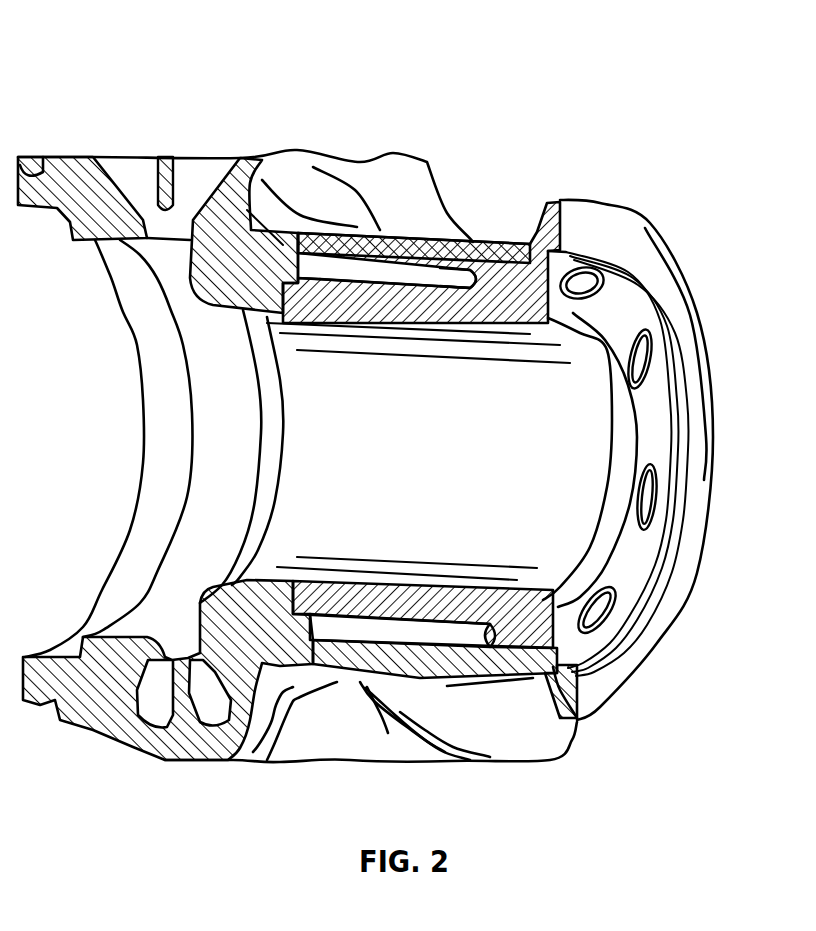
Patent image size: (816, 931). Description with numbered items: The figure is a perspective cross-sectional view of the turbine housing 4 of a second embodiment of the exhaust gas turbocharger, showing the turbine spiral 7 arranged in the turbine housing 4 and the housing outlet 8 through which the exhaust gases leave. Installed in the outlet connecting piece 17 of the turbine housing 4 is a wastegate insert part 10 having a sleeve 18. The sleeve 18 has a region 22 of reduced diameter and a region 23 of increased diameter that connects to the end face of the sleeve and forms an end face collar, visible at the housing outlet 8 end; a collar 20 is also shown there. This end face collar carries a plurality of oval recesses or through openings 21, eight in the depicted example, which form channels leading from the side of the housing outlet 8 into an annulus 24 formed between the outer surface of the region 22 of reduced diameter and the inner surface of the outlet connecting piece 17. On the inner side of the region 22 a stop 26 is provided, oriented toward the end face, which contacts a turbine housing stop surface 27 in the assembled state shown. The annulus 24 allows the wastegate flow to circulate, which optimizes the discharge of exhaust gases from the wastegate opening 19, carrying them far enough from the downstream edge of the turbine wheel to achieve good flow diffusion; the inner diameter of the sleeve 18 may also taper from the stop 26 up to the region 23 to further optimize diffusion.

The turbine housing 4 is at (213, 148).
The turbine spiral 7 is at (202, 170).
The housing outlet 8 is at (650, 223).
The wastegate insert part 10 is at (463, 285).
The outlet connecting piece 17 is at (433, 250).
The sleeve 18 is at (435, 604).
The wastegate opening 19 is at (460, 630).
The collar 20 is at (593, 268).
The through openings 21 is at (638, 364).
The region reduced in diameter 22 is at (360, 603).
The region increased in diameter 23 is at (537, 620).
The annulus 24 is at (380, 277).
The stop 26 is at (310, 282).
The turbine housing stop surface 27 is at (280, 293).